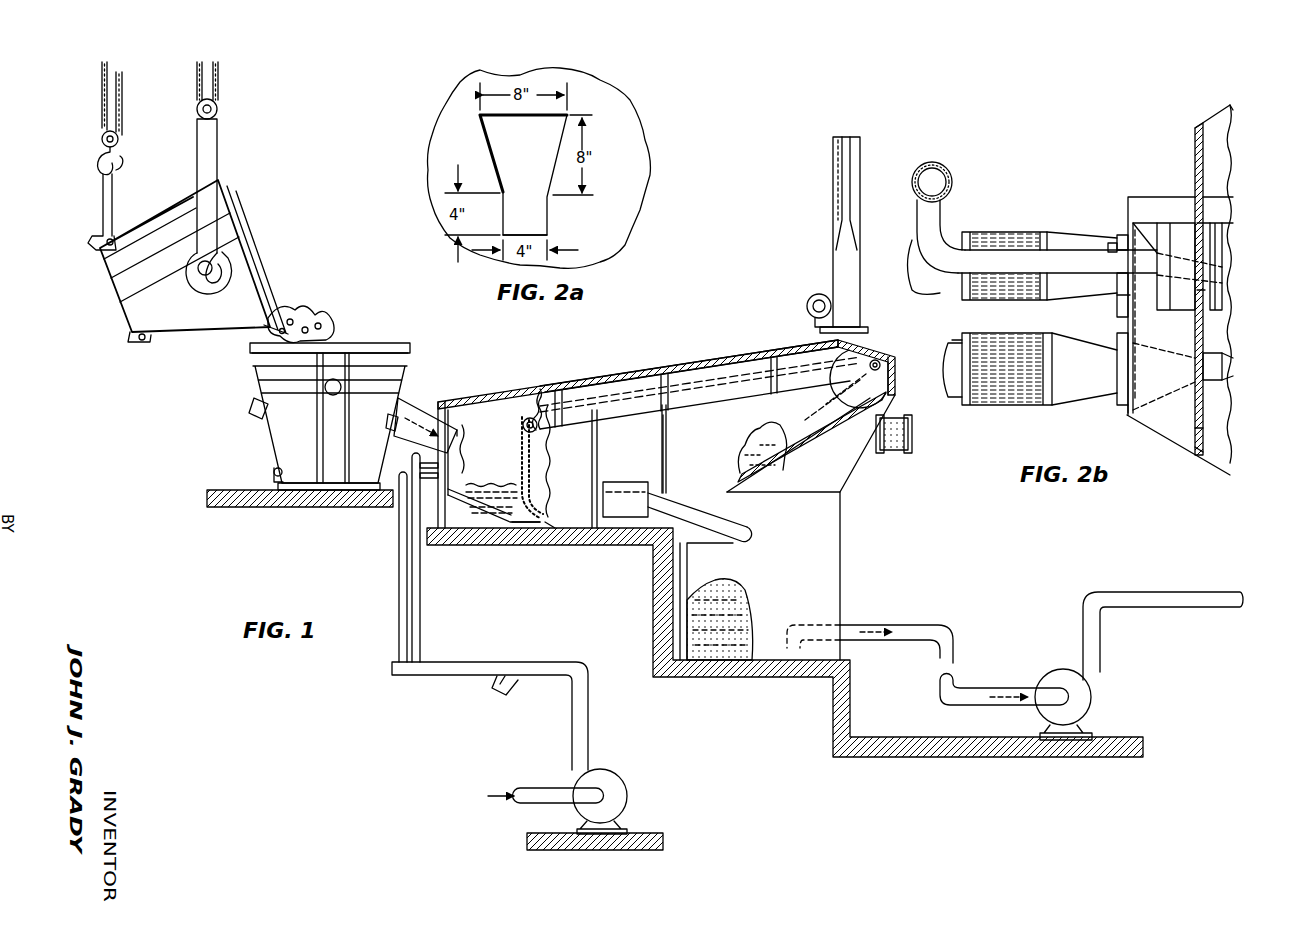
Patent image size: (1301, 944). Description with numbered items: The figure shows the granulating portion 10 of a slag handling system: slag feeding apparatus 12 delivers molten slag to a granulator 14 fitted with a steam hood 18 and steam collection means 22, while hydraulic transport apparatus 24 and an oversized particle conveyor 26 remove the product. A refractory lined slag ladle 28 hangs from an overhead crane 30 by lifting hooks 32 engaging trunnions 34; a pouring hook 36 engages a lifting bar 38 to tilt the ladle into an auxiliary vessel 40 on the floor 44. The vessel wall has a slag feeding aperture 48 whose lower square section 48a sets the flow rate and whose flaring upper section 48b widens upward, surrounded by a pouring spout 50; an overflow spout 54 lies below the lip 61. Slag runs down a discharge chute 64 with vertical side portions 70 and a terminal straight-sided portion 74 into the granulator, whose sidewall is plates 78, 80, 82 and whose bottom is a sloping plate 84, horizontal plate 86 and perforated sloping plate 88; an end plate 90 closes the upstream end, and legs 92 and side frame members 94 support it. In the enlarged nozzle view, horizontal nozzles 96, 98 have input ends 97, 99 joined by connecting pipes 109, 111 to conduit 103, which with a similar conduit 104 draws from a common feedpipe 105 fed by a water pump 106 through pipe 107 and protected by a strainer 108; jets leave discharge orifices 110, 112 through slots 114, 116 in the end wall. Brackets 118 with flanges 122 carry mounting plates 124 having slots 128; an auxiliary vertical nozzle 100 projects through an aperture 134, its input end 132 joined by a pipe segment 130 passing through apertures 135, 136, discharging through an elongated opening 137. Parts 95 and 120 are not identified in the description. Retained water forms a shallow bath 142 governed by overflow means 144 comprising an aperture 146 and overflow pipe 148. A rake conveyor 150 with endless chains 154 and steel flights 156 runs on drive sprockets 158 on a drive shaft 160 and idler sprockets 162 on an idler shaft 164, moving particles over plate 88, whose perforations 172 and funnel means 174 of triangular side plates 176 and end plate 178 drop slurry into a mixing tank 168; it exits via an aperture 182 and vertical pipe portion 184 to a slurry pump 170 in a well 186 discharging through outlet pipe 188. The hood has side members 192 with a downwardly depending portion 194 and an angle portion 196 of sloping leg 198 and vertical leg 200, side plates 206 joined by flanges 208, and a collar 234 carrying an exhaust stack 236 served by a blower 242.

In FIG. 1, the granulating portion 10 is at (514, 607).
In FIG. 1, the molten slag feeding apparatus 12 is at (312, 291).
In FIG. 1, the granulator 14 is at (538, 372).
In FIG. 1, the steam hood 18 is at (699, 357).
In FIG. 1, the steam collection and disposal means 22 is at (828, 246).
In FIG. 1, the hydraulic transport apparatus 24 is at (848, 525).
In FIG. 1, the oversized particle conveyor 26 is at (915, 441).
In FIG. 1, the slag ladle 28 is at (147, 341).
In FIG. 1, the overhead crane 30 is at (92, 104).
In FIG. 1, the lifting hook 32 is at (212, 138).
In FIG. 1, the trunnion 34 is at (213, 266).
In FIG. 1, the pouring hook 36 is at (95, 164).
In FIG. 1, the lifting bar 38 is at (90, 242).
In FIG. 1, the auxiliary vessel 40 is at (240, 376).
In FIG. 1, the floor 44 is at (221, 490).
In FIG. 2a, the slag feeding aperture 48 is at (505, 142).
In FIG. 2a, the lower square section 48a is at (533, 213).
In FIG. 2a, the flaring upper section 48b is at (500, 125).
In FIG. 1, the pouring spout 50 is at (396, 412).
In FIG. 1, the overflow spout 54 is at (252, 404).
In FIG. 1, the lip 61 is at (364, 343).
In FIG. 1, the discharge chute 64 is at (437, 395).
In FIG. 1, the vertical side portion 70 is at (417, 400).
In FIG. 1, the terminal straight-sided portion 74 is at (452, 431).
In FIG. 1, the sideplate 78 is at (562, 528).
In FIG. 1, the sideplate 80 is at (613, 430).
In FIG. 1, the downstream sideplate 82 is at (724, 438).
In FIG. 1, the sloping bottom plate 84 is at (497, 520).
In FIG. 1, the horizontal bottom plate 86 is at (520, 525).
In FIG. 1, the perforated sloping bottom plate 88 is at (760, 478).
In FIG. 1, the end plate 90 is at (427, 490).
In FIG. 2b, the end plate 90 is at (1205, 434).
In FIG. 1, the vertical legs 92 is at (443, 521).
In FIG. 1, the side frame member 94 is at (702, 405).
In FIG. 1, the retaining wall 95 is at (653, 556).
In FIG. 2b, the upper primary nozzle 96 is at (1008, 232).
In FIG. 2b, the input end 97 is at (952, 238).
In FIG. 2b, the lower primary nozzle 98 is at (1020, 405).
In FIG. 2b, the input end 99 is at (955, 340).
In FIG. 2b, the auxiliary vertical nozzle 100 is at (1180, 300).
In FIG. 1, the conduit 103 is at (421, 628).
In FIG. 2b, the conduit 103 is at (947, 172).
In FIG. 1, the conduit 104 is at (398, 628).
In FIG. 1, the water feedpipe 105 is at (445, 673).
In FIG. 1, the water pump 106 is at (620, 782).
In FIG. 1, the supply pipe 107 is at (533, 786).
In FIG. 1, the water strainer 108 is at (512, 683).
In FIG. 2b, the connecting pipe 109 is at (938, 287).
In FIG. 2b, the discharge orifice 110 is at (1204, 258).
In FIG. 2b, the connecting pipe 111 is at (956, 380).
In FIG. 2b, the discharge orifice 112 is at (1223, 366).
In FIG. 2b, the slot 114 is at (1206, 292).
In FIG. 2b, the slot 116 is at (1228, 382).
In FIG. 2b, the mounting bracket 118 is at (1178, 420).
In FIG. 2b, the wall 120 is at (1190, 440).
In FIG. 2b, the flange 122 is at (1126, 415).
In FIG. 2b, the mounting plate 124 is at (1122, 235).
In FIG. 2b, the rectangular slot 128 is at (1116, 306).
In FIG. 2b, the connecting pipe segment 130 is at (938, 214).
In FIG. 2b, the input end 132 is at (1157, 253).
In FIG. 2b, the rectangular aperture 134 is at (1193, 237).
In FIG. 2b, the aperture 135 is at (1110, 243).
In FIG. 2b, the aperture 136 is at (1133, 255).
In FIG. 2b, the nozzle discharge opening 137 is at (1222, 226).
In FIG. 1, the shallow bath 142 is at (490, 516).
In FIG. 1, the overflow means 144 is at (603, 492).
In FIG. 1, the overflow aperture 146 is at (631, 500).
In FIG. 1, the overflow pipe 148 is at (735, 537).
In FIG. 1, the rake conveyor 150 is at (522, 422).
In FIG. 1, the endless chains 154 is at (481, 449).
In FIG. 1, the flights 156 is at (492, 486).
In FIG. 1, the drive sprockets 158 is at (541, 446).
In FIG. 1, the drive shaft 160 is at (537, 428).
In FIG. 1, the idler sprockets 162 is at (871, 369).
In FIG. 1, the idler shaft 164 is at (862, 392).
In FIG. 1, the mixing tank 168 is at (834, 570).
In FIG. 1, the slurry pump 170 is at (1060, 670).
In FIG. 1, the perforations 172 is at (810, 447).
In FIG. 1, the funnel means 174 is at (852, 481).
In FIG. 1, the triangular side plates 176 is at (838, 473).
In FIG. 1, the rectangular end plate 178 is at (850, 459).
In FIG. 1, the aperture 182 is at (842, 623).
In FIG. 1, the vertical pipe portion 184 is at (943, 663).
In FIG. 1, the well 186 is at (905, 720).
In FIG. 1, the outlet pipe 188 is at (1150, 593).
In FIG. 1, the side members 192 is at (651, 370).
In FIG. 1, the downwardly depending portion 194 is at (444, 405).
In FIG. 2b, the downwardly depending portion 194 is at (1218, 117).
In FIG. 1, the angle portion 196 is at (878, 344).
In FIG. 1, the sloping upper leg 198 is at (878, 360).
In FIG. 1, the vertical leg 200 is at (893, 372).
In FIG. 1, the side plates 206 is at (787, 355).
In FIG. 1, the peripheral flanges 208 is at (567, 380).
In FIG. 1, the vertical collar portion 234 is at (856, 327).
In FIG. 1, the exhaust stack 236 is at (834, 173).
In FIG. 1, the blower 242 is at (812, 296).